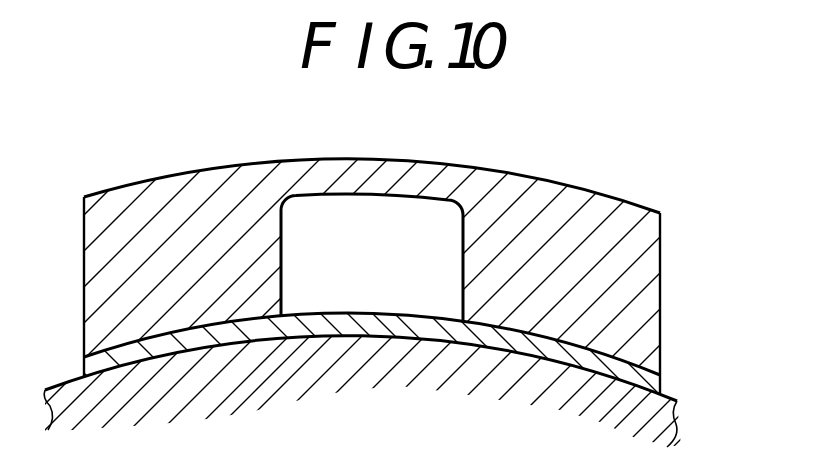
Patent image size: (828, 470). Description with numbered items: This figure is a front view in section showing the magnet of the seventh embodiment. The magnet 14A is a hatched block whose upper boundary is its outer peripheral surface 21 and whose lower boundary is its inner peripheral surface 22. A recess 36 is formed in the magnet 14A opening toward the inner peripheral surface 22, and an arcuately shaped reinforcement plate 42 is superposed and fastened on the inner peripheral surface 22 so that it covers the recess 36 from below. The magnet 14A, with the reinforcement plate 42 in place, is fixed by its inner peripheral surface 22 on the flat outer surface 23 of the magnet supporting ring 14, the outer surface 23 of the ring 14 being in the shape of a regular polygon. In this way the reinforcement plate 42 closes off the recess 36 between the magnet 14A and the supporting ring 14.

The magnet supporting ring 14 is at (669, 402).
The magnet 14A is at (121, 189).
The outer peripheral surface 21 is at (259, 162).
The inner peripheral surface 22 is at (230, 344).
The flat outer surface 23 is at (60, 388).
The recess 36 is at (352, 198).
The arcuately shaped reinforcement plate 42 is at (395, 327).